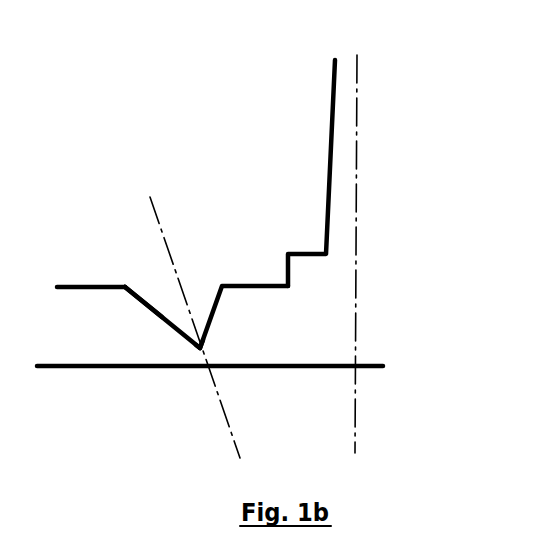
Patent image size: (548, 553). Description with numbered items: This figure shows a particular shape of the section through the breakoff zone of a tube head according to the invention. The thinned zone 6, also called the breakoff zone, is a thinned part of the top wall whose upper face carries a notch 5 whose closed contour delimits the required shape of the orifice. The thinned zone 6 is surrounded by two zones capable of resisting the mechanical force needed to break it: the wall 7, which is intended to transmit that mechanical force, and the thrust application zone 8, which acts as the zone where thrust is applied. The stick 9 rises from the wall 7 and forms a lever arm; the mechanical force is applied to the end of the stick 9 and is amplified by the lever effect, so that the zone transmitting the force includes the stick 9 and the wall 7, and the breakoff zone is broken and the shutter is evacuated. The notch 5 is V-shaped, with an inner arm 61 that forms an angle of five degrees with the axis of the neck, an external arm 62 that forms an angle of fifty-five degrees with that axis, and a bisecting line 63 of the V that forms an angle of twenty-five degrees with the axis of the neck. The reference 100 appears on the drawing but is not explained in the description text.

The notch 5 is at (163, 295).
The thinned zone 6 is at (195, 357).
The wall 7 is at (252, 323).
The thrust application zone 8 is at (73, 323).
The stick 9 is at (342, 197).
The inner arm 61 is at (212, 312).
The external arm 62 is at (160, 318).
The bisecting line 63 is at (150, 195).
The tool body 100 is at (355, 118).